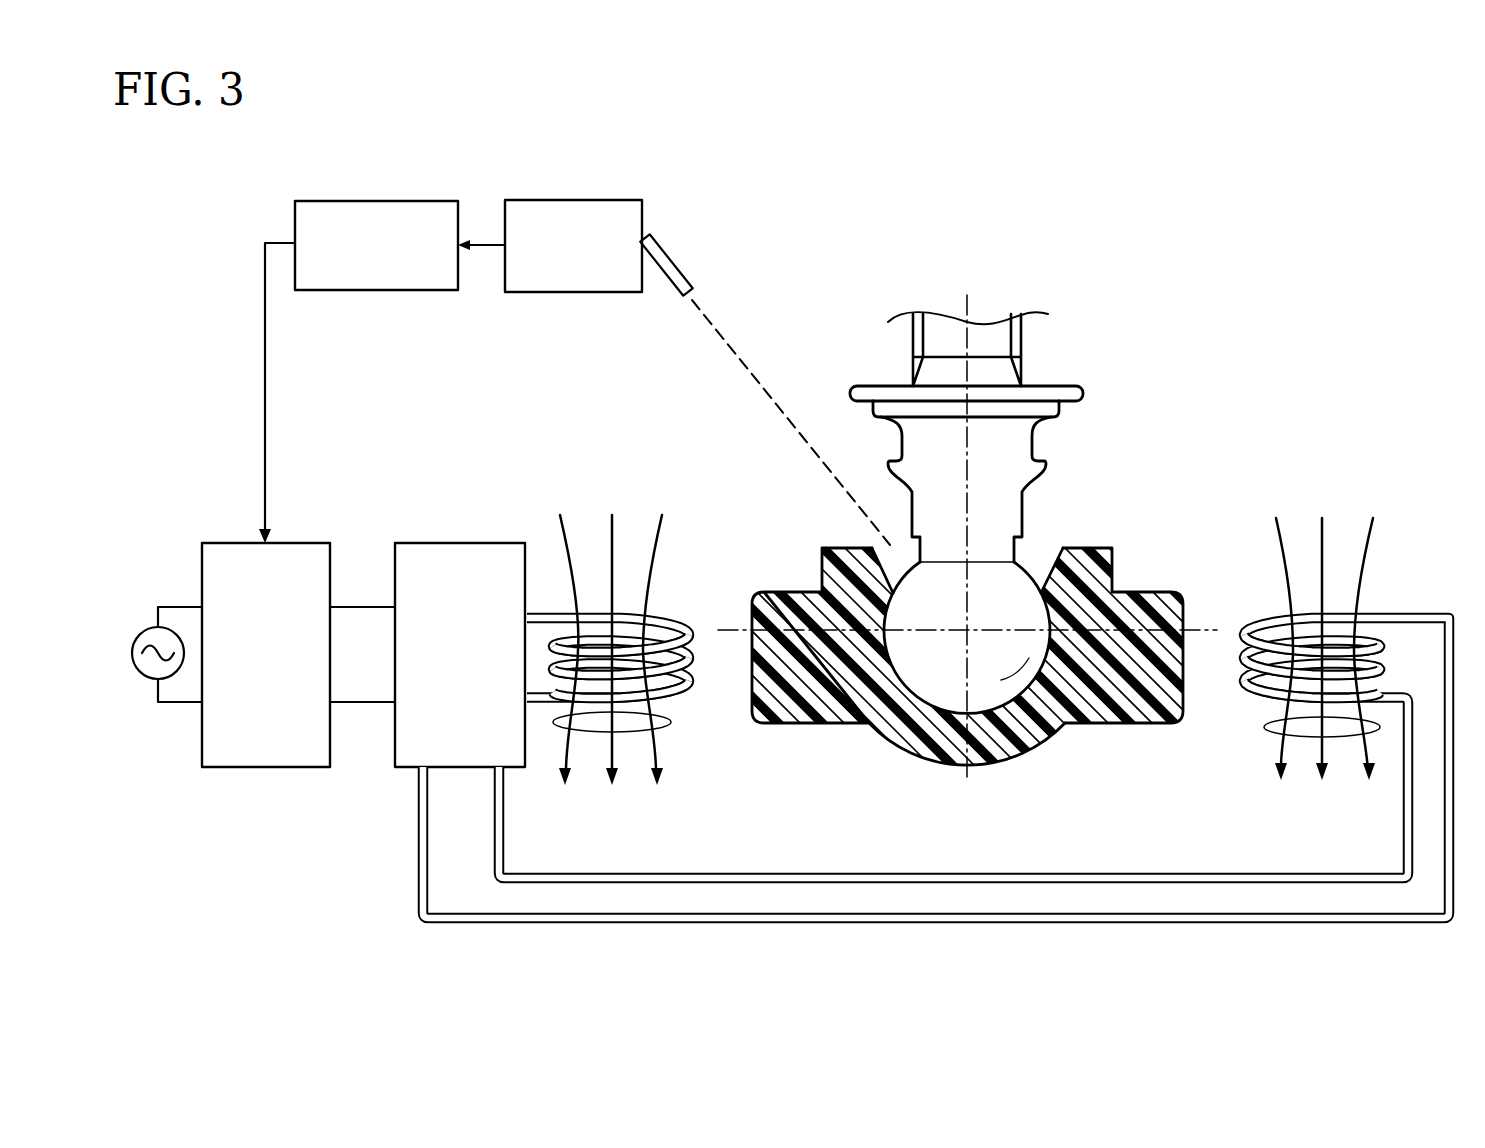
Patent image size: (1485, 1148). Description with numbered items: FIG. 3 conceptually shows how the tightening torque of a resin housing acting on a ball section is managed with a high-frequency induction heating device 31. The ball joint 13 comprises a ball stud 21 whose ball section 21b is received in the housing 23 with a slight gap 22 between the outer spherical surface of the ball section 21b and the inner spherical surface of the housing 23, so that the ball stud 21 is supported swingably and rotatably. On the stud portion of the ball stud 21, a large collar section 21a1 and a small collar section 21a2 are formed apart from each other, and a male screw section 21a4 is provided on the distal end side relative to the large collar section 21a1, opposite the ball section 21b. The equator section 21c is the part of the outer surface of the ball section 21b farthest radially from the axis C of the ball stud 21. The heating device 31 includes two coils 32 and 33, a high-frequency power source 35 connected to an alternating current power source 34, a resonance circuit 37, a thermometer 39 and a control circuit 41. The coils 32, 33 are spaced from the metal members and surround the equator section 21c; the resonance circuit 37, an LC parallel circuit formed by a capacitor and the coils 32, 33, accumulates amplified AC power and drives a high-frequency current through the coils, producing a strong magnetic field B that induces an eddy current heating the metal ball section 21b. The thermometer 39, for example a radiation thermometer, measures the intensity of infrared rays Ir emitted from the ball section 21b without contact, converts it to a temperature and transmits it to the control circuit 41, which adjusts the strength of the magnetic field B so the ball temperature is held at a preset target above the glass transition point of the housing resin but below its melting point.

The ball joint 13 is at (996, 621).
The ball stud 21 is at (980, 559).
The large collar section 21a1 is at (1083, 392).
The small collar section 21a2 is at (1043, 462).
The male screw section 21a4 is at (912, 345).
The ball section 21b is at (977, 695).
The equator section 21c is at (1200, 628).
The slight gap 22 is at (1032, 704).
The housing 23 is at (1117, 717).
The high-frequency induction heating device 31 is at (750, 186).
The coil 32 is at (672, 623).
The coil 33 is at (1382, 613).
The alternating current power source 34 is at (138, 630).
The high-frequency power source 35 is at (224, 543).
The resonance circuit 37 is at (418, 543).
The thermometer 39 is at (530, 200).
The control circuit 41 is at (322, 201).
The magnetic field B is at (671, 727).
The axis C is at (970, 306).
The infrared radiation Ir is at (717, 330).